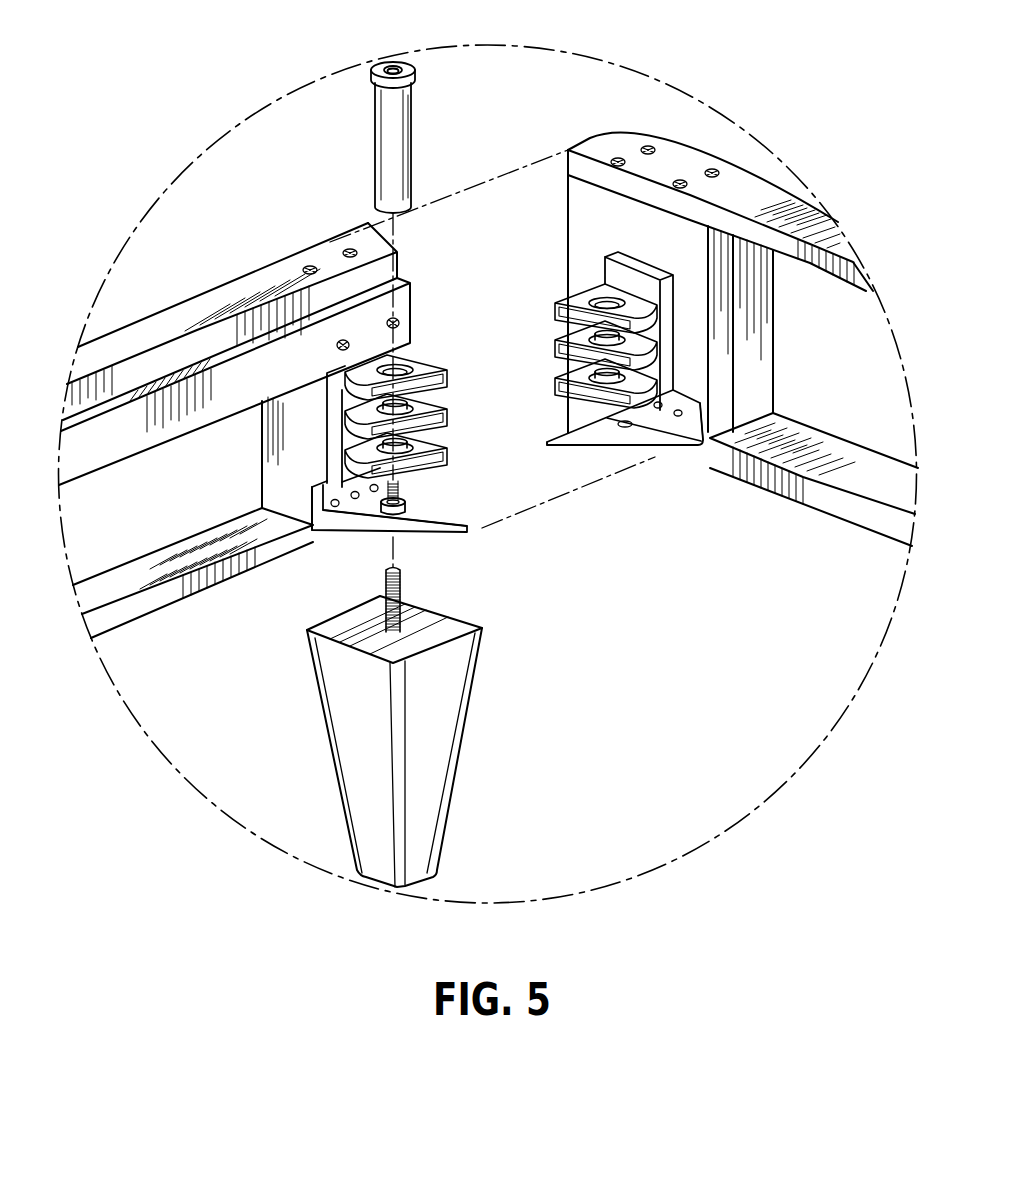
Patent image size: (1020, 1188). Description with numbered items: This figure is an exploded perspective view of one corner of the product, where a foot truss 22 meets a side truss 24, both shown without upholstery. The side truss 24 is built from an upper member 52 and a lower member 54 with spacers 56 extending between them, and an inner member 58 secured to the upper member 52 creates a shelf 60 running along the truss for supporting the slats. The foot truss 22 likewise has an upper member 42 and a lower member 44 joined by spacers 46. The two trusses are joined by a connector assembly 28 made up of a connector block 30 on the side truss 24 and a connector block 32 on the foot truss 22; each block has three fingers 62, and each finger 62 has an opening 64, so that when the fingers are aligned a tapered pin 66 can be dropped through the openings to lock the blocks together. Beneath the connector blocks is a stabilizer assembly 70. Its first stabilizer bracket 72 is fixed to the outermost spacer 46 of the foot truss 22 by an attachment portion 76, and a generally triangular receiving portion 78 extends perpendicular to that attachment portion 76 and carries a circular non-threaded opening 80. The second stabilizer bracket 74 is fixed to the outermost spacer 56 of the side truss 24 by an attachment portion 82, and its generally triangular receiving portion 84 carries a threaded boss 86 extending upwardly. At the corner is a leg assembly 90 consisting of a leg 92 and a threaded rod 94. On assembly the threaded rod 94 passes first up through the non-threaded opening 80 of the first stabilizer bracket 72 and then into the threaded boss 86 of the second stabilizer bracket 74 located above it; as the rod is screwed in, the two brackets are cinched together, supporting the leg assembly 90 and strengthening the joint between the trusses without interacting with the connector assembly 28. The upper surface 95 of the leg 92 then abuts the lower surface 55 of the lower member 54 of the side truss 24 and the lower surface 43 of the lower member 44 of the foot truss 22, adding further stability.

The foot truss 22 is at (748, 160).
The side truss 24 is at (136, 314).
The connector assembly 28 is at (575, 78).
The connector block 30 is at (318, 425).
The connector block 32 is at (684, 300).
The upper member 42 is at (683, 162).
The lower surface 43 is at (855, 524).
The lower member 44 is at (882, 468).
The spacer 46 is at (762, 383).
The upper member 52 is at (282, 273).
The lower member 54 is at (118, 580).
The lower surface 55 is at (168, 608).
The spacer 56 is at (268, 497).
The inner member 58 is at (245, 392).
The shelf 60 is at (257, 347).
The finger 62 is at (447, 383).
The opening 64 is at (397, 366).
The tapered pin 66 is at (380, 123).
The stabilizer assembly 70 is at (641, 498).
The first stabilizer bracket 72 is at (653, 455).
The second stabilizer bracket 74 is at (448, 540).
The attachment portion 76 is at (693, 422).
The receiving portion 78 is at (573, 440).
The circular non-threaded opening 80 is at (614, 430).
The attachment portion 82 is at (312, 530).
The receiving portion 84 is at (370, 520).
The threaded boss 86 is at (410, 507).
The leg assembly 90 is at (468, 752).
The leg 92 is at (437, 820).
The threaded rod 94 is at (397, 615).
The upper surface 95 is at (357, 633).